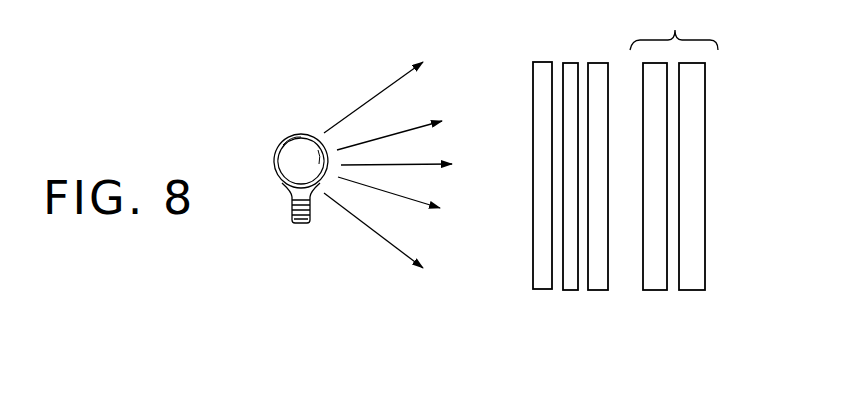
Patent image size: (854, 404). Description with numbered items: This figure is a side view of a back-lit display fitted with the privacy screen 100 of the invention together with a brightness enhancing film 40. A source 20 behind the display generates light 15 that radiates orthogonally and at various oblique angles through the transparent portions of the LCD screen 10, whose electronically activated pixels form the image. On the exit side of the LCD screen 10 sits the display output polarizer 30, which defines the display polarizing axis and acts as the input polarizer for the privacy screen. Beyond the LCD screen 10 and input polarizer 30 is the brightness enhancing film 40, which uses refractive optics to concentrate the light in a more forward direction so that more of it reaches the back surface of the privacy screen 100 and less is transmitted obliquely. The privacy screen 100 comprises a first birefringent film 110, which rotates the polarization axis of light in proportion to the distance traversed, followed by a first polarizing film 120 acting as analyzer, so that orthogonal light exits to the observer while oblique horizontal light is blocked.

The LCD screen 10 is at (541, 292).
The light 15 is at (397, 80).
The source 20 is at (285, 152).
The display output polarizer 30 is at (569, 292).
The brightness enhancing film 40 is at (597, 292).
The privacy screen 100 is at (674, 181).
The first birefringent film 110 is at (654, 292).
The first polarizing film 120 is at (691, 292).